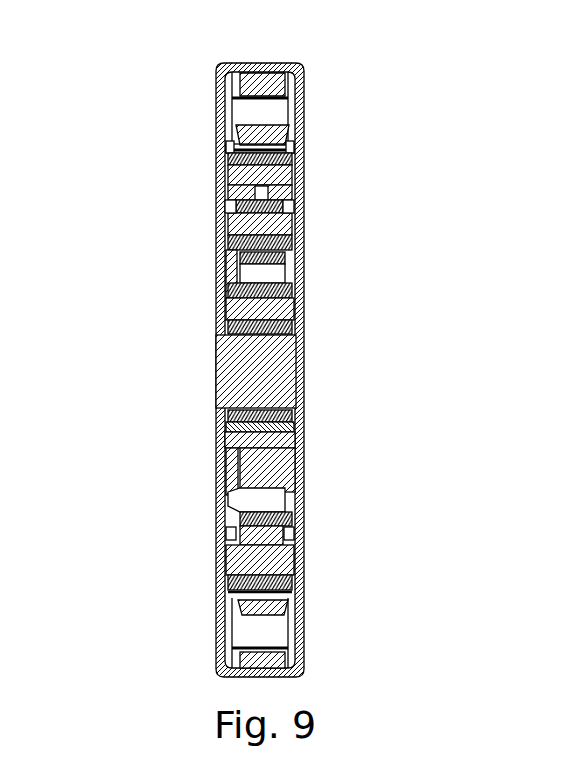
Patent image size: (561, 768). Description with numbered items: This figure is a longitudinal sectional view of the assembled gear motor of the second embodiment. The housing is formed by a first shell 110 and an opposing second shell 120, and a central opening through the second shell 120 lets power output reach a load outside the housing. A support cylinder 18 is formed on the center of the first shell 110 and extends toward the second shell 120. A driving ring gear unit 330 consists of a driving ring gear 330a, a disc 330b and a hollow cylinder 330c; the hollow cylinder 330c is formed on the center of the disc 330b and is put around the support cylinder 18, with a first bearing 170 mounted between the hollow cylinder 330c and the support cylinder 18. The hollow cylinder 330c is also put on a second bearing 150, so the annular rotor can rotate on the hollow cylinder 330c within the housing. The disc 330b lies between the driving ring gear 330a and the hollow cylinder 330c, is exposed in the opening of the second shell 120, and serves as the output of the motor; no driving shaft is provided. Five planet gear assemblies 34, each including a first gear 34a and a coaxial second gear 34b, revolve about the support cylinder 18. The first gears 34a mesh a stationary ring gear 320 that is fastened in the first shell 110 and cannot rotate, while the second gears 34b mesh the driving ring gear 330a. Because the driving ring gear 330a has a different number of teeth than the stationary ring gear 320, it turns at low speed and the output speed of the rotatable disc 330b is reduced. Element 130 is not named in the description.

The second shell 120 is at (218, 100).
The first shell 110 is at (305, 145).
The stationary ring gear 320 is at (305, 181).
The first gear 34a is at (305, 198).
The second gear 34b is at (230, 202).
The planet gear assembly 34 is at (276, 202).
The hollow cylinder 330c is at (305, 295).
The support cylinder 18 is at (292, 362).
The first bearing 170 is at (285, 405).
The second bearing 150 is at (288, 432).
The driving ring gear unit 330 is at (226, 275).
The disc 330b is at (222, 472).
The driving ring gear 330a is at (225, 530).
The bottom bearing assembly 130 is at (295, 648).